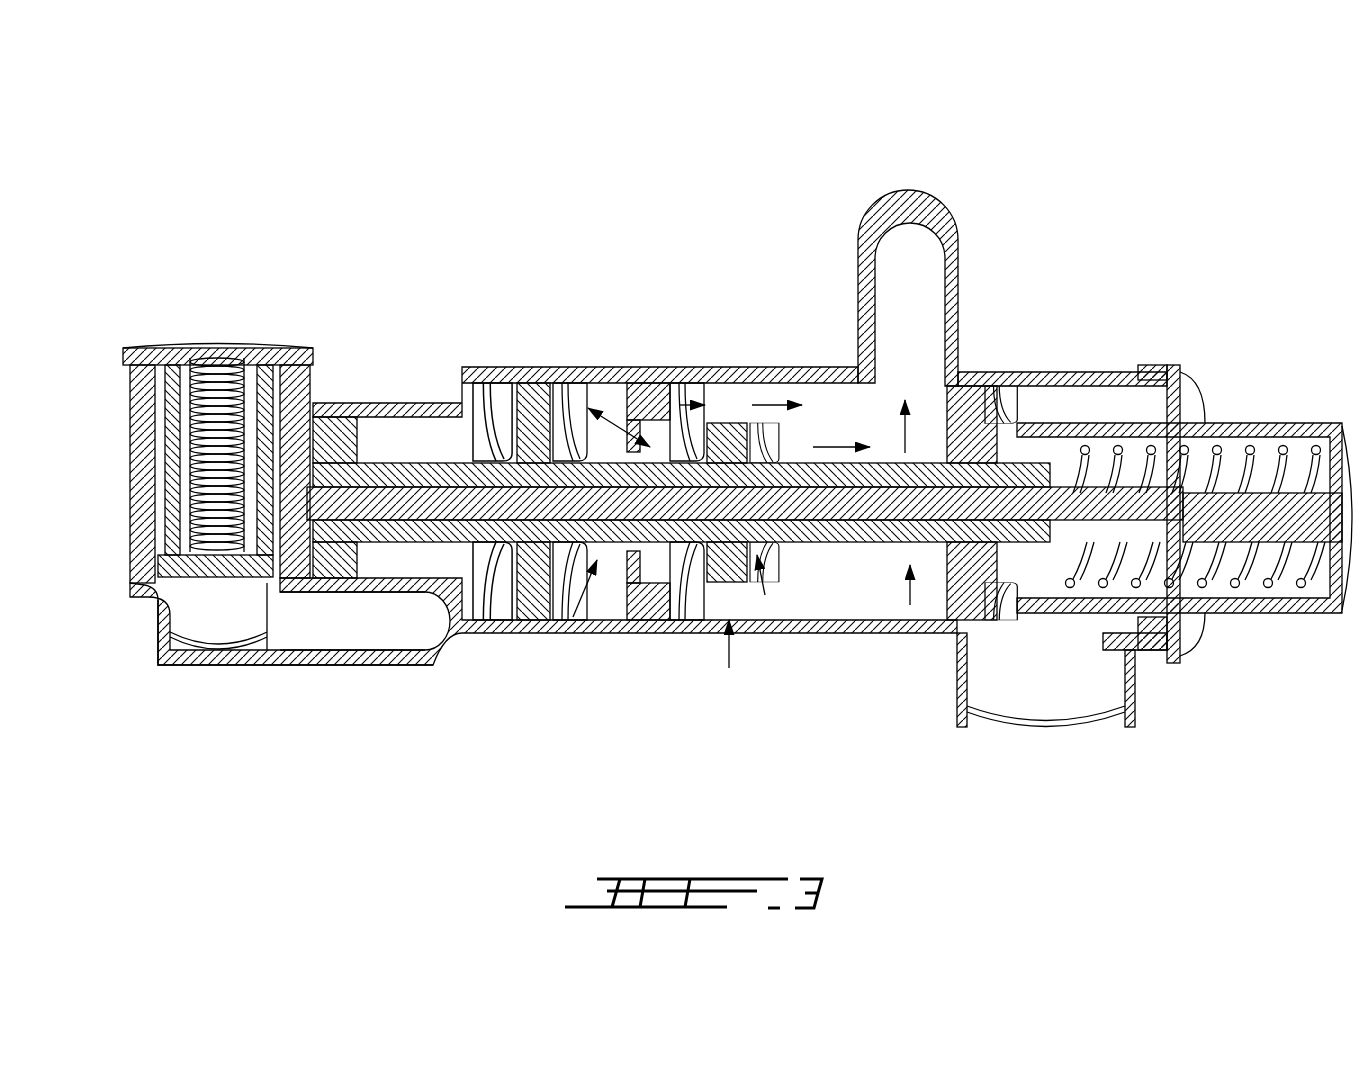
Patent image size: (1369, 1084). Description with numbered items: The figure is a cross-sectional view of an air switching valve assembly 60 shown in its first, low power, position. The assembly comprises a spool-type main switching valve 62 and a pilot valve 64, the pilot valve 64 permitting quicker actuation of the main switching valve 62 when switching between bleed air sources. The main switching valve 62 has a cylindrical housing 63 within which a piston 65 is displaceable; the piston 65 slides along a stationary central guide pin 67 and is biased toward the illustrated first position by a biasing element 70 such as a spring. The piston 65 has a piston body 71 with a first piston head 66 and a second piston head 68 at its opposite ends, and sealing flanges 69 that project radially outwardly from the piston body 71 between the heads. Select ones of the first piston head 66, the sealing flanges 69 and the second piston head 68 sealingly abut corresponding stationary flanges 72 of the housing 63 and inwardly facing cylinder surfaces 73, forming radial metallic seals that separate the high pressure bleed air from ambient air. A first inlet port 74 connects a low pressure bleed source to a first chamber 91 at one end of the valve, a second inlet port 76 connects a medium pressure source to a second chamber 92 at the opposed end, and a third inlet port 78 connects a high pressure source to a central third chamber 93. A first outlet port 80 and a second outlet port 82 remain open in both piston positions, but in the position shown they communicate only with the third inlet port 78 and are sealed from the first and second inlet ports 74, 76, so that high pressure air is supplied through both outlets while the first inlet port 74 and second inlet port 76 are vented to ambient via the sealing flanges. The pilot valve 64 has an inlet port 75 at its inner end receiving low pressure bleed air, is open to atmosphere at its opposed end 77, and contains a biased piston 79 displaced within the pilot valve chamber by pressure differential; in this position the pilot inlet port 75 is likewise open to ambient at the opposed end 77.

The air switching valve assembly 60 is at (1073, 205).
The main switching valve 62 is at (613, 652).
The cylindrical housing 63 is at (588, 420).
The pilot valve 64 is at (145, 601).
The piston 65 is at (892, 600).
The first piston head 66 is at (337, 428).
The central guide pin 67 is at (787, 497).
The second piston head 68 is at (995, 470).
The sealing flanges 69 is at (530, 440).
The biasing element 70 is at (1248, 455).
The piston body 71 is at (777, 605).
The stationary flanges 72 is at (650, 597).
The inwardly facing cylinder surfaces 73 is at (430, 560).
The first inlet port 74 is at (1060, 680).
The inlet port 75 is at (218, 610).
The second inlet port 76 is at (400, 430).
The opposed end 77 is at (237, 327).
The third inlet port 78 is at (760, 620).
The biased piston 79 is at (130, 503).
The first outlet port 80 is at (908, 270).
The second outlet port 82 is at (588, 600).
The first chamber 91 is at (1140, 615).
The second chamber 92 is at (390, 550).
The third chamber 93 is at (688, 440).